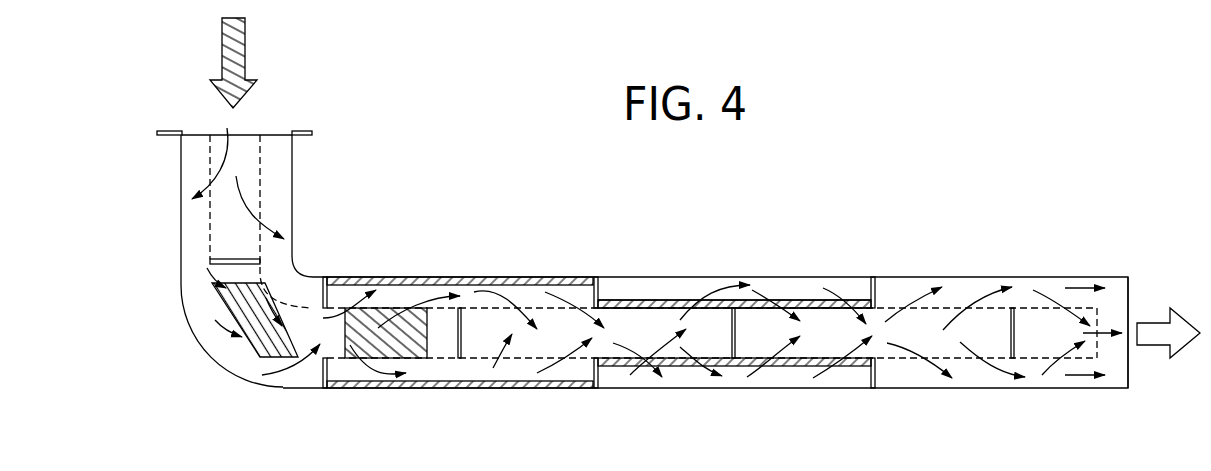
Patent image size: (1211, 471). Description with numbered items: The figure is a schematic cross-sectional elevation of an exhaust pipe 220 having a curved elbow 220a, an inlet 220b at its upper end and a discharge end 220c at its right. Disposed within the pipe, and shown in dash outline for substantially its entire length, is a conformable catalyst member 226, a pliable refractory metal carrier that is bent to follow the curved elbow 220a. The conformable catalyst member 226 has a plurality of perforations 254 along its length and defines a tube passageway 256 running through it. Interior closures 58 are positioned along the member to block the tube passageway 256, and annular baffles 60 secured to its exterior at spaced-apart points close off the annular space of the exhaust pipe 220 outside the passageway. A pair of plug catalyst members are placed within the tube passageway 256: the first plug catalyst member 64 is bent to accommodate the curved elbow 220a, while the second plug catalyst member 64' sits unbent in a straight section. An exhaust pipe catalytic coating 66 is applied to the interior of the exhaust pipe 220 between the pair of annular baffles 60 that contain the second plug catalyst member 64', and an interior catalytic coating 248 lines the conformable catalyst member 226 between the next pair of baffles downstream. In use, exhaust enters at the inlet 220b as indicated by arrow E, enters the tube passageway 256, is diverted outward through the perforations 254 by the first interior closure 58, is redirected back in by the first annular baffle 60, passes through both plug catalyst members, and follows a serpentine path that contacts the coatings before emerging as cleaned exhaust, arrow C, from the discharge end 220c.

The exhaust inlet arrow E is at (222, 42).
The cleaned exhaust arrow C is at (1153, 346).
The exhaust pipe 220 is at (738, 277).
The curved elbow 220a is at (256, 385).
The inlet 220b is at (296, 133).
The discharge end 220c is at (1130, 297).
The conformable catalyst member 226 is at (288, 207).
The exhaust pipe catalytic coating 66 is at (515, 290).
The annular baffles 60 is at (328, 297).
The interior closures 58 is at (233, 260).
The interior catalytic coating 248 is at (798, 302).
The first plug catalyst member 64 is at (249, 345).
The second plug catalyst member 64' is at (390, 298).
The perforations 254 is at (262, 176).
The tube passageway 256 is at (227, 203).